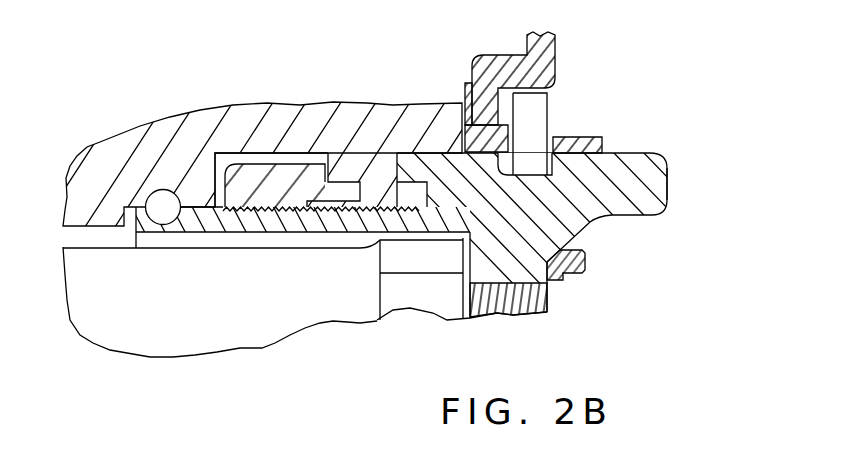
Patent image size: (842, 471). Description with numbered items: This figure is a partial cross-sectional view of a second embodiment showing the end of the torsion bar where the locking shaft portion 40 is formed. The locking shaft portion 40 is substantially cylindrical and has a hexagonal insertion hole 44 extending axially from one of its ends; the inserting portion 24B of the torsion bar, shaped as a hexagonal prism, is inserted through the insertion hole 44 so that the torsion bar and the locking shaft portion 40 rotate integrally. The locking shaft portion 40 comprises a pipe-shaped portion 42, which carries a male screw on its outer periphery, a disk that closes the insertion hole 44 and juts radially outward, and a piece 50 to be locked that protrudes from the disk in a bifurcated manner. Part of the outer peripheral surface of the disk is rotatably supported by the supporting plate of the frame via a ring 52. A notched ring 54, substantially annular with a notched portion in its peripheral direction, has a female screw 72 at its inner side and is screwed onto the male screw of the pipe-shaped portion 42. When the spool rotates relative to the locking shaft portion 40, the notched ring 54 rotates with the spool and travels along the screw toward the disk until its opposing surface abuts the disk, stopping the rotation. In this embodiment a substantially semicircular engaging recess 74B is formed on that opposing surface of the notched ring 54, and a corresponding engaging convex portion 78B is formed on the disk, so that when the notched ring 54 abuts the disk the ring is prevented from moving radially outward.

The inserting portion 24B is at (395, 288).
The locking shaft portion 40 is at (670, 172).
The pipe-shaped portion 42 is at (195, 225).
The insertion hole 44 is at (177, 228).
The piece to be locked 50 is at (667, 197).
The ring 52 is at (508, 140).
The notched ring 54 is at (250, 208).
The female screw 72 is at (242, 208).
The engaging recess 74B is at (347, 185).
The engaging convex portion 78B is at (378, 153).